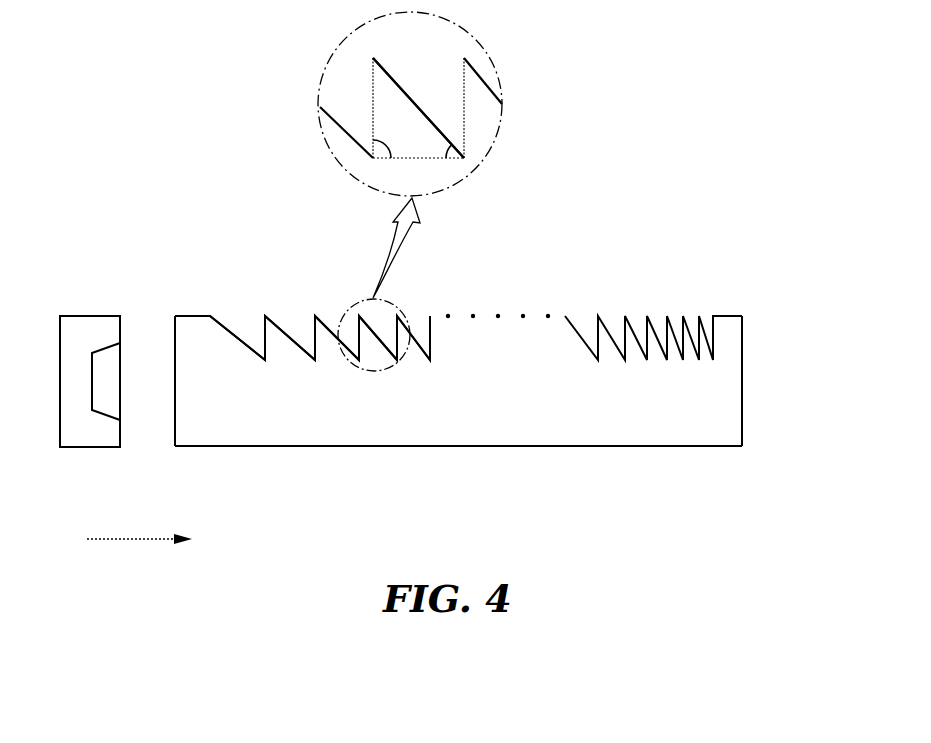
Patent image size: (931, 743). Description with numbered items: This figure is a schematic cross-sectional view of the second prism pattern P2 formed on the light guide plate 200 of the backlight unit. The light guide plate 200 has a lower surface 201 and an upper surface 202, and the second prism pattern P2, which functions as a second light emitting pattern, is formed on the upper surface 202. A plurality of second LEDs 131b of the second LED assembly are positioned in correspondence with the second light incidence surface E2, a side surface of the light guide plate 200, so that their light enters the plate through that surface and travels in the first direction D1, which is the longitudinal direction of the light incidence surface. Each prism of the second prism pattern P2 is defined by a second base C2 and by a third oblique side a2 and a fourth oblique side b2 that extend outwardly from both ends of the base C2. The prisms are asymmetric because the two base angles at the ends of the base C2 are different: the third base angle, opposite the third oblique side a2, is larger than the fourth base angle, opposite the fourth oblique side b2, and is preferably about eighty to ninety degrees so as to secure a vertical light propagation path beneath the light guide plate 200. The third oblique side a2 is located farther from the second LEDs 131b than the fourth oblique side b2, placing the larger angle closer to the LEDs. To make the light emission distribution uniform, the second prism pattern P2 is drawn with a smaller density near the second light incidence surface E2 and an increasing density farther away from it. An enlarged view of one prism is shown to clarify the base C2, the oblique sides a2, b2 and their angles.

The second LEDs 131b is at (84, 316).
The light guide plate 200 is at (742, 380).
The lower surface 201 is at (725, 447).
The upper surface 202 is at (726, 316).
The second prism pattern P2 is at (263, 311).
The second base C2 is at (425, 191).
The second light incidence surface E2 is at (175, 417).
The first direction D1 is at (157, 540).
The third oblique side a2 is at (418, 108).
The fourth oblique side b2 is at (361, 108).